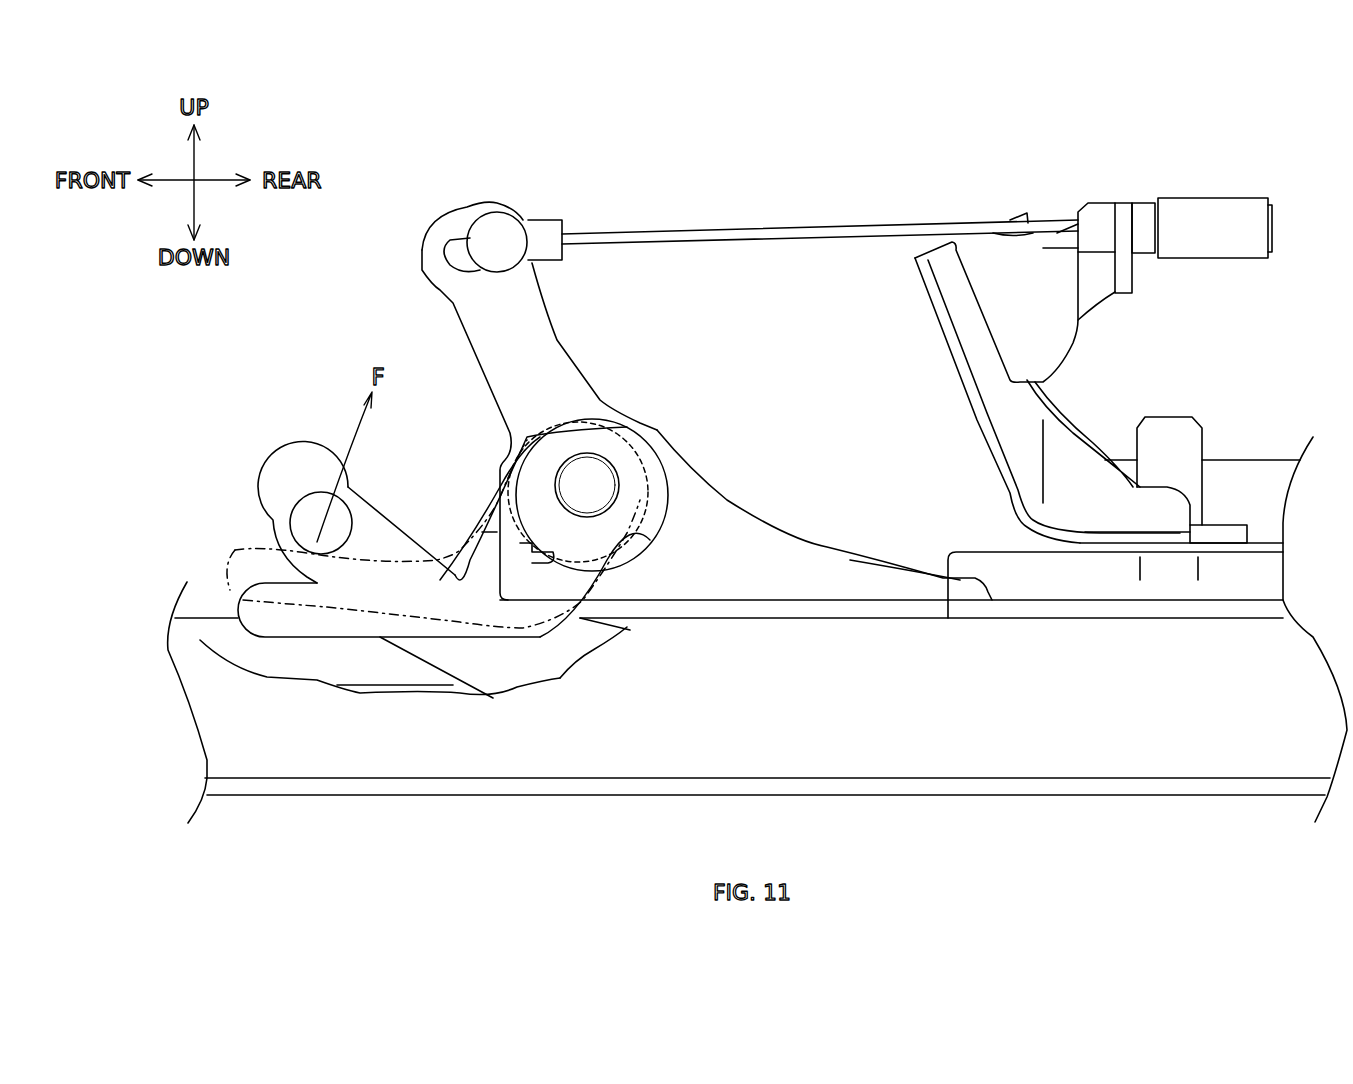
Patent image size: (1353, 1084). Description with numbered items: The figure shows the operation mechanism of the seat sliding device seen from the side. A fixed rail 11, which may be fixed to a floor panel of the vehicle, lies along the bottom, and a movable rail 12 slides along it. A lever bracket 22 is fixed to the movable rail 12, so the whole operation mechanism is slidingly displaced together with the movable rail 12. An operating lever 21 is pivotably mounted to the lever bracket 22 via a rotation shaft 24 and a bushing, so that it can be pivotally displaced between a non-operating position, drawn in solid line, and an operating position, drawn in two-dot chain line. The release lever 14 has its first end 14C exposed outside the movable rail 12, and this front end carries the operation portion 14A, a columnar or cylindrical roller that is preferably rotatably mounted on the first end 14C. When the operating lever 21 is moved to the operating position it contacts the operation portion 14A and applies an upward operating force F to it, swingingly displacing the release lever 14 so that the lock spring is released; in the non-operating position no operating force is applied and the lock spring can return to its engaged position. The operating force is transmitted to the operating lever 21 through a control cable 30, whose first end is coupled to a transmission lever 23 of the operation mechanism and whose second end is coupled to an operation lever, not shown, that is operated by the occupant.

The fixed rail 11 is at (1180, 748).
The movable rail 12 is at (1043, 610).
The release lever 14 is at (300, 473).
The operation portion 14A is at (303, 500).
The first end 14C is at (413, 533).
The operating lever 21 is at (315, 638).
The lever bracket 22 is at (747, 510).
The transmission lever 23 is at (570, 343).
The rotation shaft 24 is at (593, 473).
The control cable 30 is at (830, 227).